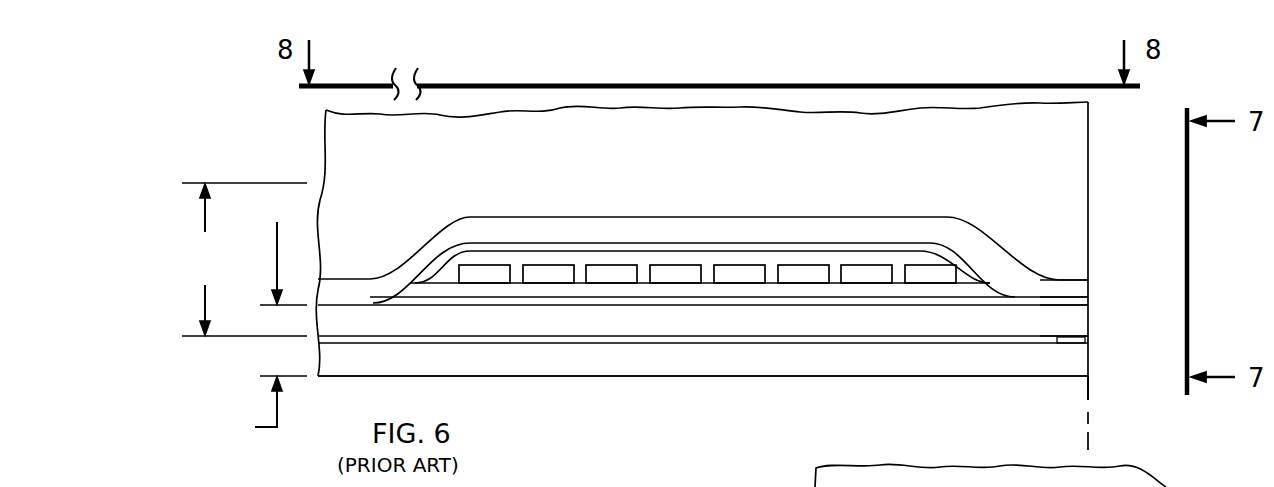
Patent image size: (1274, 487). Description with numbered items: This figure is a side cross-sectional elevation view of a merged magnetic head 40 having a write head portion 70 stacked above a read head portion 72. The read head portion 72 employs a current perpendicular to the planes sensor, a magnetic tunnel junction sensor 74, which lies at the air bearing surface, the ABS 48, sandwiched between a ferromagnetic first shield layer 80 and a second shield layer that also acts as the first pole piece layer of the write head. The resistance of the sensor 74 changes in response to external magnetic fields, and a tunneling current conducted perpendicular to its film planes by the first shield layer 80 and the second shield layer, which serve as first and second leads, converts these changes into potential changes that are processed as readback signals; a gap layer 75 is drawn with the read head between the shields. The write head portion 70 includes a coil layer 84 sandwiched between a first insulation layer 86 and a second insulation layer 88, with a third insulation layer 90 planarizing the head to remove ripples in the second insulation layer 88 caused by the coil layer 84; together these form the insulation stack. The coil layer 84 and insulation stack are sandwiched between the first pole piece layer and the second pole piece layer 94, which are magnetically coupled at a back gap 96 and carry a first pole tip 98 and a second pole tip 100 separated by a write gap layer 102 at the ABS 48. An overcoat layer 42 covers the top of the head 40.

The merged magnetic head 40 is at (297, 110).
The overcoat layer 42 is at (1070, 132).
The air bearing surface (ABS) 48 is at (1090, 414).
The write head portion 70 is at (229, 259).
The read head portion 72 is at (226, 409).
The magnetic tunnel junction sensor 74 is at (1085, 343).
The first gap layer 75 is at (655, 343).
The first shield layer 80 is at (836, 362).
The coil layer 84 is at (740, 272).
The first insulation layer 86 is at (558, 290).
The second insulation layer 88 is at (970, 277).
The third insulation layer 90 is at (483, 248).
The second pole piece layer 94 is at (848, 222).
The back gap 96 is at (352, 305).
The first pole tip 98 is at (1088, 323).
The second pole tip 100 is at (1083, 289).
The write gap layer 102 is at (1085, 303).